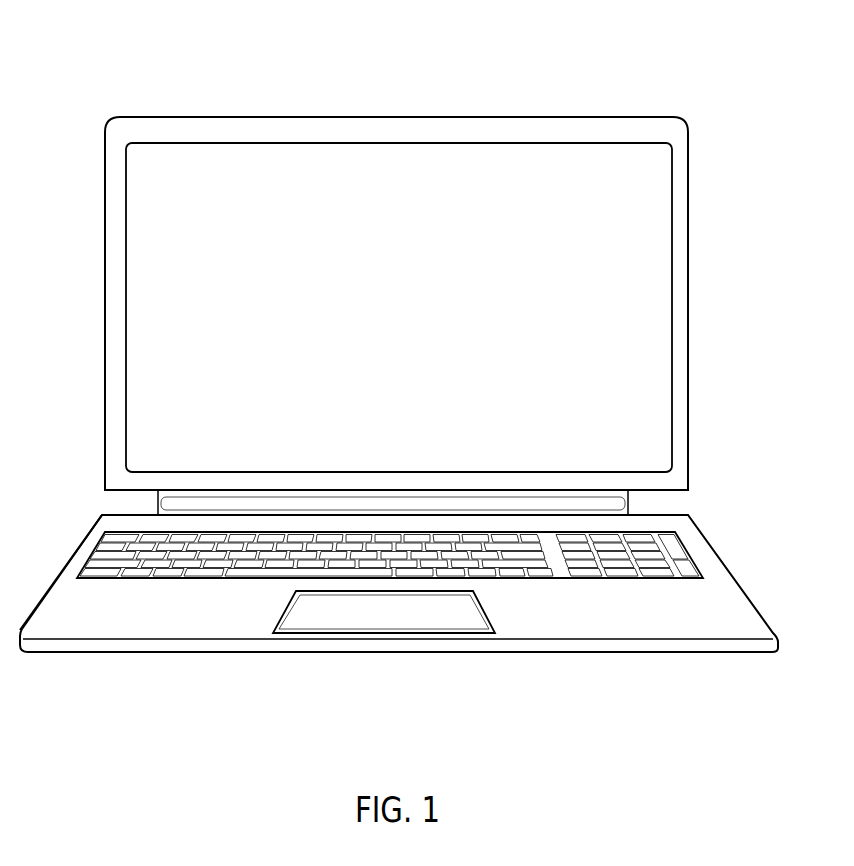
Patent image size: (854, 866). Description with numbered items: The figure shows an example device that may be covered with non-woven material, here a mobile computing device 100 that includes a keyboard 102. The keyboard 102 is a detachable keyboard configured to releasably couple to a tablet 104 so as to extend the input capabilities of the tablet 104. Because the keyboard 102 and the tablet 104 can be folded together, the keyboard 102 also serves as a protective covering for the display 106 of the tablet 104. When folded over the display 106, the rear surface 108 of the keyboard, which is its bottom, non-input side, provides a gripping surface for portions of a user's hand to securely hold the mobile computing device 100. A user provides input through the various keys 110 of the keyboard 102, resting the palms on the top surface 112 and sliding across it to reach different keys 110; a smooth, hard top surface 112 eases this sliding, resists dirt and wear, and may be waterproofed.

The mobile computing device 100 is at (124, 40).
The keyboard 102 is at (693, 511).
The tablet 104 is at (660, 117).
The display 106 is at (672, 153).
The rear surface 108 is at (540, 661).
The keys 110 is at (107, 542).
The top surface 112 is at (61, 596).